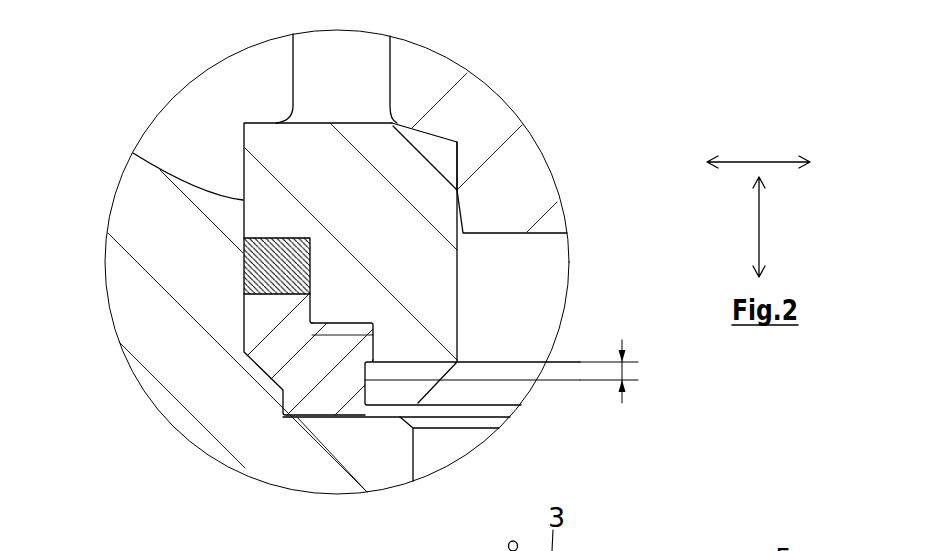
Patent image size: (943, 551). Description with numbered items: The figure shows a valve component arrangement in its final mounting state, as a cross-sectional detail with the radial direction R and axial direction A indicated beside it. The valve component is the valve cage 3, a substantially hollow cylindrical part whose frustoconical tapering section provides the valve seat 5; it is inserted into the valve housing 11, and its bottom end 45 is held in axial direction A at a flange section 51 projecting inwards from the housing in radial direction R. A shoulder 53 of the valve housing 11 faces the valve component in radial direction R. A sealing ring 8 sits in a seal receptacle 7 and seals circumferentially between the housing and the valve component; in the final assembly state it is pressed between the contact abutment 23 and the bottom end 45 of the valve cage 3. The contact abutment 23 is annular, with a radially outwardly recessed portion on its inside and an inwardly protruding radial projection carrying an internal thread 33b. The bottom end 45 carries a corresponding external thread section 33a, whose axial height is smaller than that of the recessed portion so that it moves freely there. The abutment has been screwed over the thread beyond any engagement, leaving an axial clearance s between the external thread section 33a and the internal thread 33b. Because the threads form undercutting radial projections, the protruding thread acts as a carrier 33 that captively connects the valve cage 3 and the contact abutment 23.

The valve cage 3 is at (375, 67).
The valve seat 5 is at (447, 122).
The seal receptacle 7 is at (209, 258).
The sealing ring 8 is at (314, 408).
The valve housing 11 is at (173, 230).
The contact abutment 23 is at (263, 370).
The carrier 33 is at (333, 429).
The external thread section 33a is at (372, 383).
The internal thread 33b is at (367, 350).
The bottom end 45 is at (440, 282).
The flange section 51 is at (390, 458).
The shoulder 53 is at (200, 195).
The axial clearance s is at (626, 378).
The radial direction R is at (753, 161).
The axial direction A is at (760, 230).